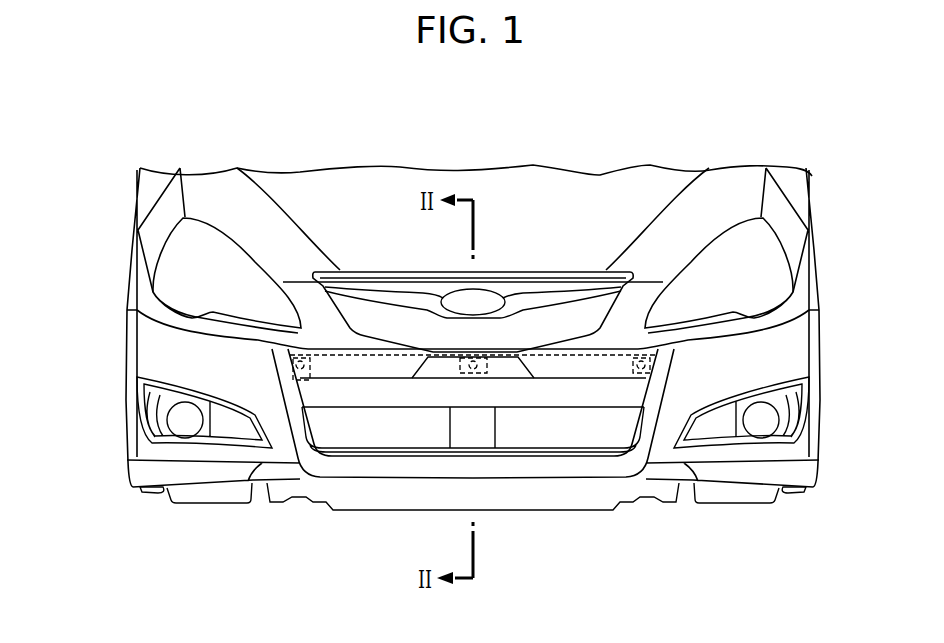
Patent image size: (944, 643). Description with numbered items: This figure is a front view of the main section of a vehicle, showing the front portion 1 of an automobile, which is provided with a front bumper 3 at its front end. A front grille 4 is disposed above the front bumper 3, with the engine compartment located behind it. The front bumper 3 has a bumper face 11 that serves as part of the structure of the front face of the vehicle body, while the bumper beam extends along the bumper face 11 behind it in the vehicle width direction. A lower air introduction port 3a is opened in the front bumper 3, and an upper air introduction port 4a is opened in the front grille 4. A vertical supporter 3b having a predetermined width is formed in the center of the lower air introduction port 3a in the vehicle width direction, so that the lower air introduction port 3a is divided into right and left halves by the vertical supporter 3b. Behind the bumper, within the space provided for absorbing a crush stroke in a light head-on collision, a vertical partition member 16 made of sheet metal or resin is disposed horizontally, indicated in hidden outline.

The front portion 1 is at (72, 228).
The front bumper 3 is at (124, 352).
The lower air introduction port 3a is at (380, 433).
The vertical supporter 3b is at (490, 427).
The front grille 4 is at (583, 270).
The upper air introduction port 4a is at (372, 317).
The bumper face 11 is at (658, 450).
The vertical partition member 16 is at (296, 380).